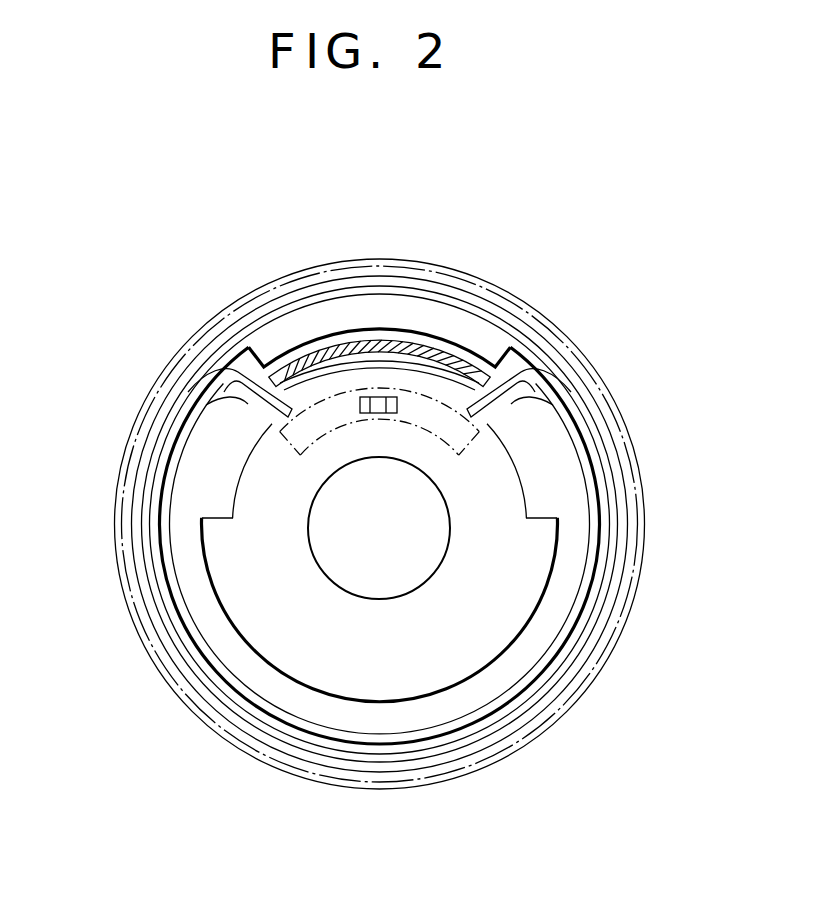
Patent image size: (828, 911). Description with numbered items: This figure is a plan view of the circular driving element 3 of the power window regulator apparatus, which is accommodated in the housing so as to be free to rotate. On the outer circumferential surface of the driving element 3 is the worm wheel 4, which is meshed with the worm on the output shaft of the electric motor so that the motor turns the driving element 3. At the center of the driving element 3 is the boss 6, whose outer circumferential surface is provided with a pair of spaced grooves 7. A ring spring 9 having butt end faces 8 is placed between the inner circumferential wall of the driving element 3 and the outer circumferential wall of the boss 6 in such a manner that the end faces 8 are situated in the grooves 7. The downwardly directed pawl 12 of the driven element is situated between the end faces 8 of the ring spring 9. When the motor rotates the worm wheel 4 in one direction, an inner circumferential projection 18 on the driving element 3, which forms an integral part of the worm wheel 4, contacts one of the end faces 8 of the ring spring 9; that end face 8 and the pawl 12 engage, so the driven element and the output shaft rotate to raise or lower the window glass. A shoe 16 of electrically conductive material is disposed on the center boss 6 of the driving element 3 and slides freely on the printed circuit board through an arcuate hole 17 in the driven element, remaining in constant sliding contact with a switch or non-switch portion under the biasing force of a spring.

The driving element 3 is at (620, 386).
The worm wheel 4 is at (626, 622).
The boss 6 is at (448, 657).
The grooves 7 is at (235, 478).
The end faces 8 is at (210, 398).
The ring spring 9 is at (172, 612).
The pawl 12 is at (460, 365).
The shoe 16 is at (380, 403).
The arcuate hole 17 is at (413, 396).
The inner circumferential projection 18 is at (347, 322).